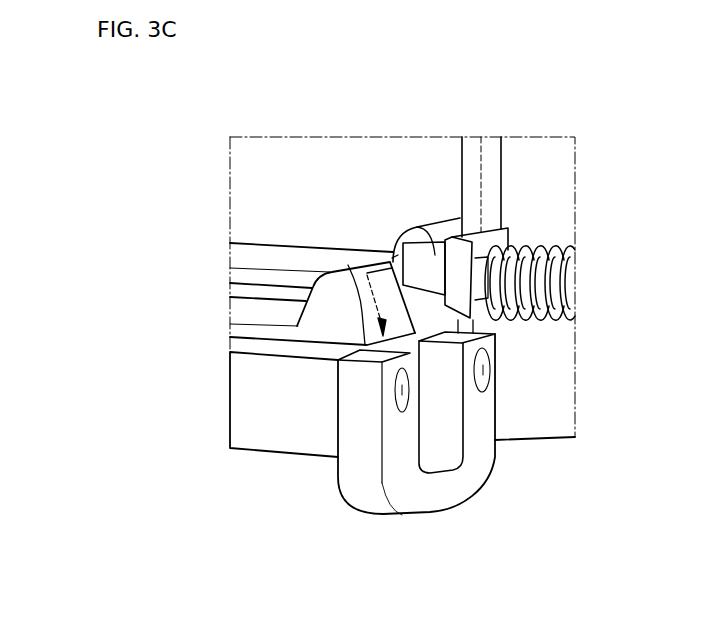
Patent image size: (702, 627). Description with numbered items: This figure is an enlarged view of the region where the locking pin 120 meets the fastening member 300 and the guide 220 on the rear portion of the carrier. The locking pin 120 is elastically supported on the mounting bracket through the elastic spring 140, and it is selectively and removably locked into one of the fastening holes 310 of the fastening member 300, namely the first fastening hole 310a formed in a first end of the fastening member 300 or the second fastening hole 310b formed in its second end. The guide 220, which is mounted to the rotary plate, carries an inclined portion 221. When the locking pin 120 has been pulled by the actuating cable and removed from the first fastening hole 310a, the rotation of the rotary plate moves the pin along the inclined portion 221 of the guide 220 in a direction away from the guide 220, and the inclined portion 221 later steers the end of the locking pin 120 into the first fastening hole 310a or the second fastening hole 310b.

The locking pin 120 is at (435, 254).
The elastic spring 140 is at (522, 248).
The guide 220 is at (247, 311).
The inclined portion 221 is at (425, 237).
The fastening member 300 is at (389, 471).
The fastening holes 310 is at (440, 471).
The first fastening hole 310a is at (483, 395).
The second fastening hole 310b is at (402, 412).